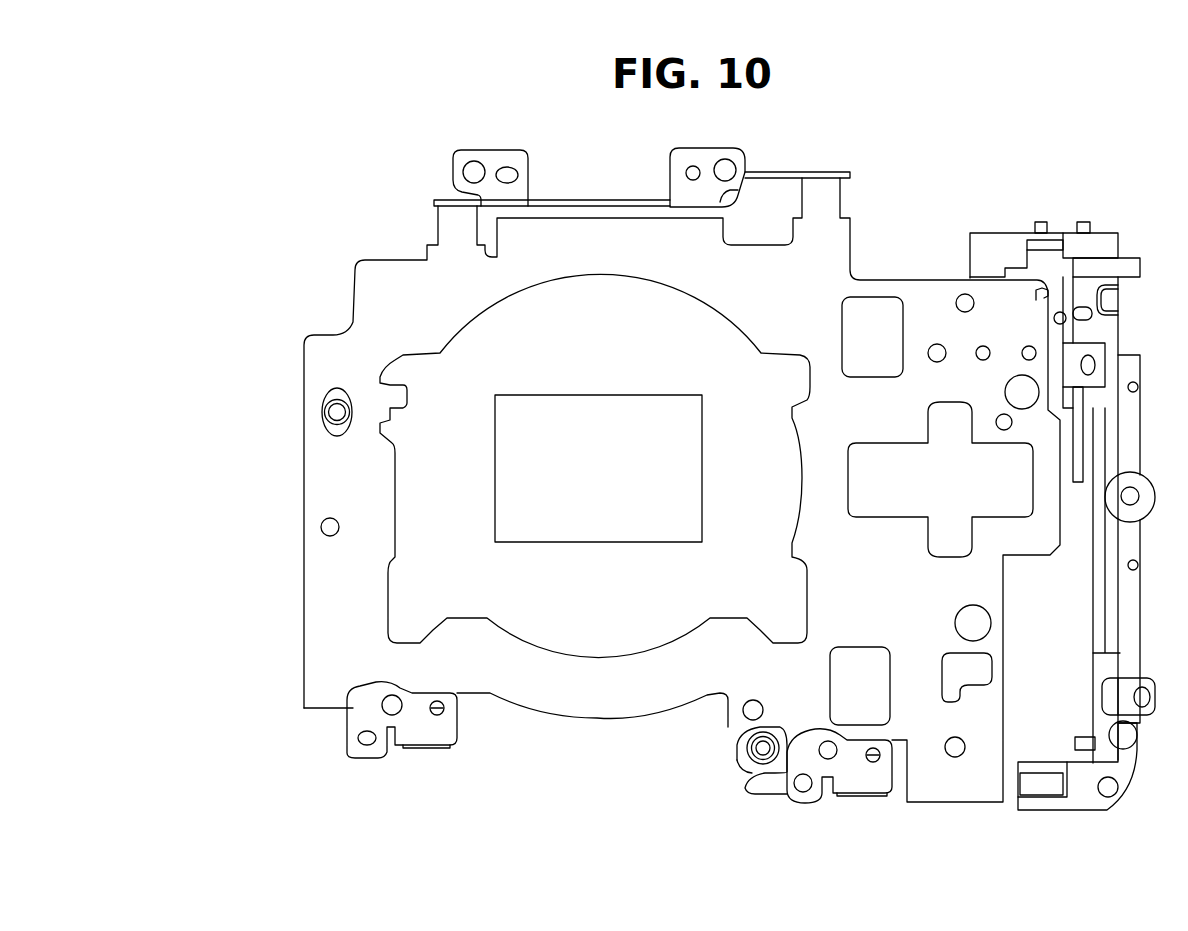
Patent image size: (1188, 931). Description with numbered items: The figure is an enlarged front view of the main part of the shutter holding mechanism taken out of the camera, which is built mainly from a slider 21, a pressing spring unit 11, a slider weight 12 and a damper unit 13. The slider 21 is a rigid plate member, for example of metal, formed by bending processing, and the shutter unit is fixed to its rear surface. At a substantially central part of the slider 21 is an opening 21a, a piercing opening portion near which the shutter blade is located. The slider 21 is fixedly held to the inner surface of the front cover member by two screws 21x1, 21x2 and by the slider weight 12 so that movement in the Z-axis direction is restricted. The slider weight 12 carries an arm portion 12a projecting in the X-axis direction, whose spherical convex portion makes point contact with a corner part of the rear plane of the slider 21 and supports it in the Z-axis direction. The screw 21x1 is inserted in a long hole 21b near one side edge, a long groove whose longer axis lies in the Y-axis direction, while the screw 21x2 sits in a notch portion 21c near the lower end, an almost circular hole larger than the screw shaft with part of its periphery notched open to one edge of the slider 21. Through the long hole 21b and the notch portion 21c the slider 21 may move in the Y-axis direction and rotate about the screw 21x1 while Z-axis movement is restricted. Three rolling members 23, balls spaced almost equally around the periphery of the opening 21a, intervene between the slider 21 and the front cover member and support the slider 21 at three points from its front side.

The pressing spring unit 11 is at (563, 198).
The slider weight 12 is at (1098, 245).
The arm portion 12a is at (1038, 288).
The damper unit 13 is at (428, 732).
The slider 21 is at (388, 266).
The opening 21a is at (528, 493).
The long hole 21b is at (330, 431).
The notch portion 21c is at (786, 741).
The screw 21x1 is at (335, 411).
The screw 21x2 is at (763, 760).
The rolling members 23 is at (937, 345).